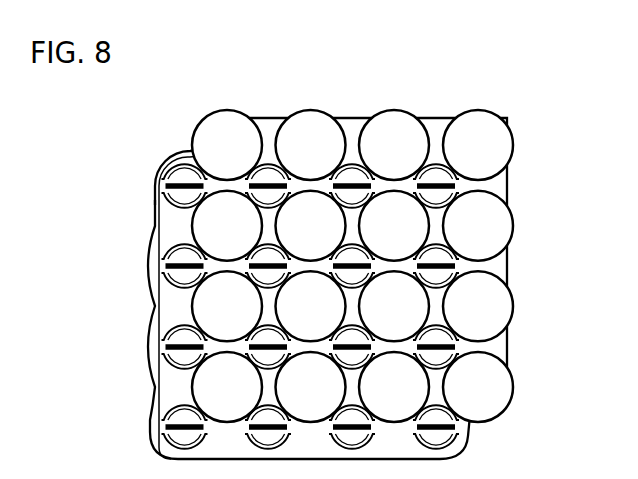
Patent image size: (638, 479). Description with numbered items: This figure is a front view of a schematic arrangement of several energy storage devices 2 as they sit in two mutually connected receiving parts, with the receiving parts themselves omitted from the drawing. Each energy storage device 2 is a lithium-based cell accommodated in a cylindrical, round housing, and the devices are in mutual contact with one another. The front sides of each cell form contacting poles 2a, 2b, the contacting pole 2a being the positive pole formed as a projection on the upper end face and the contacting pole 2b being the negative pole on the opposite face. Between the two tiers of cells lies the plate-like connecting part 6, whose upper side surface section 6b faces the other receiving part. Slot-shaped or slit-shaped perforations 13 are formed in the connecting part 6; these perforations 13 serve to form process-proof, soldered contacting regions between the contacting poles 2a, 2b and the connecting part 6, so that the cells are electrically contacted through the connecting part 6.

The energy storage device 2 is at (366, 250).
The contacting pole 2a is at (158, 160).
The contacting pole 2b is at (478, 146).
The connecting part 6 is at (283, 288).
The upper side surface section 6b is at (170, 299).
The perforation 13 is at (167, 200).